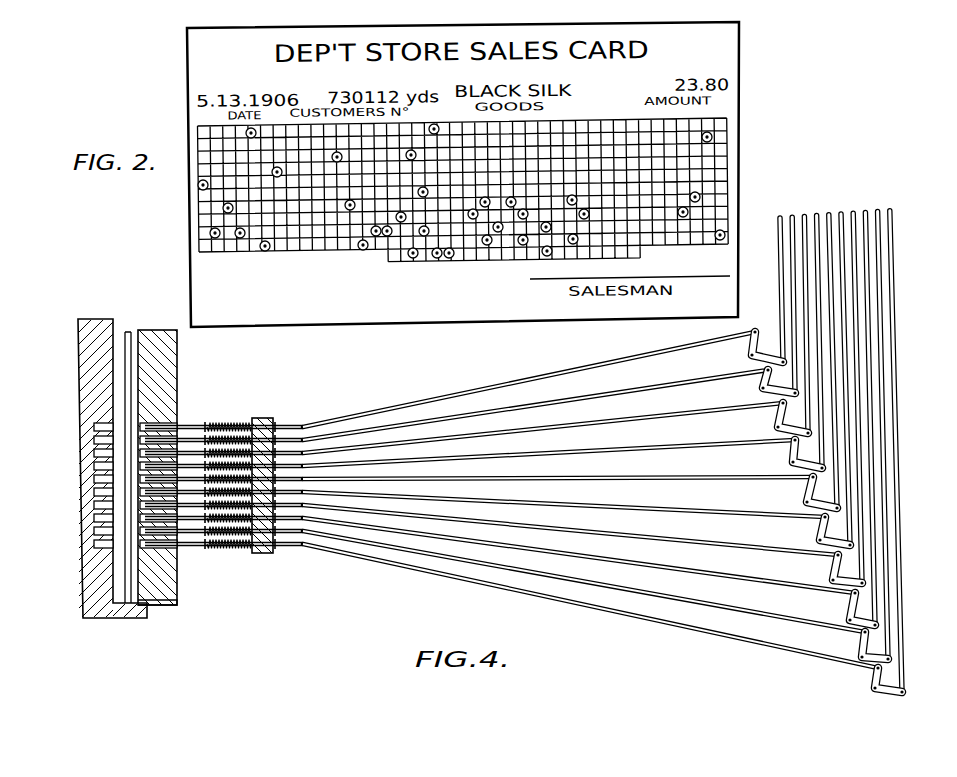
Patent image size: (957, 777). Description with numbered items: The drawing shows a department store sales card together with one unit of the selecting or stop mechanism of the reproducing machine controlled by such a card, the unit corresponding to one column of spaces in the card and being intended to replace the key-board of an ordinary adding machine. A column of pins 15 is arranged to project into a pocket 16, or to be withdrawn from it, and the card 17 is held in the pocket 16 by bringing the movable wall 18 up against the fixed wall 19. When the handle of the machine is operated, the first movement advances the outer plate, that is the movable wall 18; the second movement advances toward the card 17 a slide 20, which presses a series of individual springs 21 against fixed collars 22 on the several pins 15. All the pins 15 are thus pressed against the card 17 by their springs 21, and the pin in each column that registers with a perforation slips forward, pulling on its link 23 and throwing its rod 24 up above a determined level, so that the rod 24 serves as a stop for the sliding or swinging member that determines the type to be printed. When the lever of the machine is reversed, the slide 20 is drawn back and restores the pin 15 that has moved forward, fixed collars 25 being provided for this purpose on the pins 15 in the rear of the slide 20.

The pins 15 is at (196, 549).
The pocket 16 is at (124, 578).
The card 17 is at (165, 578).
The movable wall 18 is at (92, 560).
The fixed wall 19 is at (166, 606).
The slide 20 is at (266, 556).
The springs 21 is at (237, 556).
The fixed collars 22 is at (207, 424).
The link 23 is at (553, 578).
The rod 24 is at (873, 323).
The fixed collars 25 is at (300, 552).